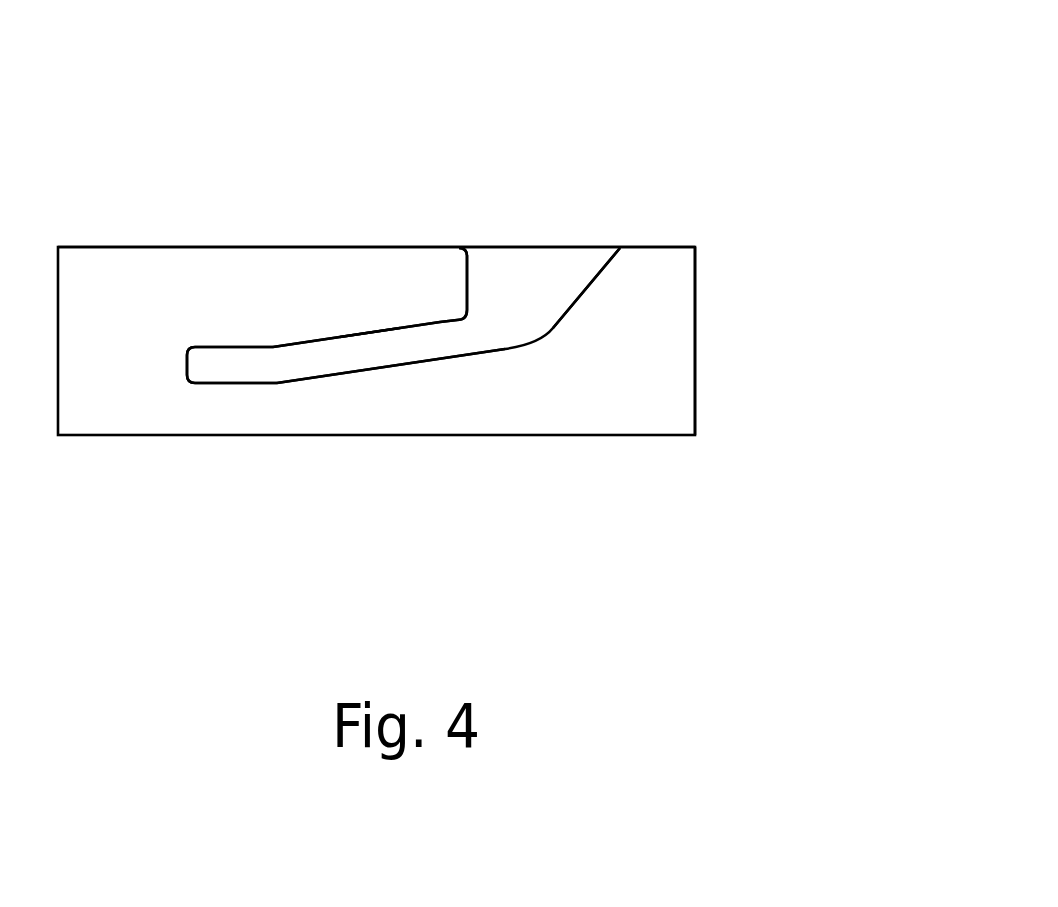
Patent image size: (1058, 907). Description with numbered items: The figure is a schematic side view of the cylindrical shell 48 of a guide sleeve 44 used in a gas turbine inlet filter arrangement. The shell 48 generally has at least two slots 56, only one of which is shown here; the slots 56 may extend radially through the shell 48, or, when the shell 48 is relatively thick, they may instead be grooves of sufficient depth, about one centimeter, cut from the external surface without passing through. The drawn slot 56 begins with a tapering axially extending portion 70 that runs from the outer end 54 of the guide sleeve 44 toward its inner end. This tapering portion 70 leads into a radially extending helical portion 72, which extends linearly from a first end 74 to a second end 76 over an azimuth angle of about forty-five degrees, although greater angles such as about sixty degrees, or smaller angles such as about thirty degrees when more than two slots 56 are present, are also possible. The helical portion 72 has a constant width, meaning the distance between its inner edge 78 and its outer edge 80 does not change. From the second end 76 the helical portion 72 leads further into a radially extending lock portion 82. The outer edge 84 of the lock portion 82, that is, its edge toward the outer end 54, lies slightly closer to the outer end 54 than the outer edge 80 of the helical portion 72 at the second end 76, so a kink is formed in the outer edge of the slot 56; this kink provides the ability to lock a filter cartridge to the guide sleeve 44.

The guide sleeve 44 is at (695, 372).
The cylindrical shell 48 is at (695, 323).
The outer end 54 is at (647, 247).
The slot 56 is at (470, 350).
The tapering axially extending portion 70 is at (581, 287).
The helical portion 72 is at (407, 370).
The first end 74 is at (447, 320).
The second end 76 is at (297, 343).
The inner edge 78 is at (355, 373).
The outer edge 80 is at (370, 332).
The lock portion 82 is at (222, 383).
The outer edge 84 is at (233, 347).